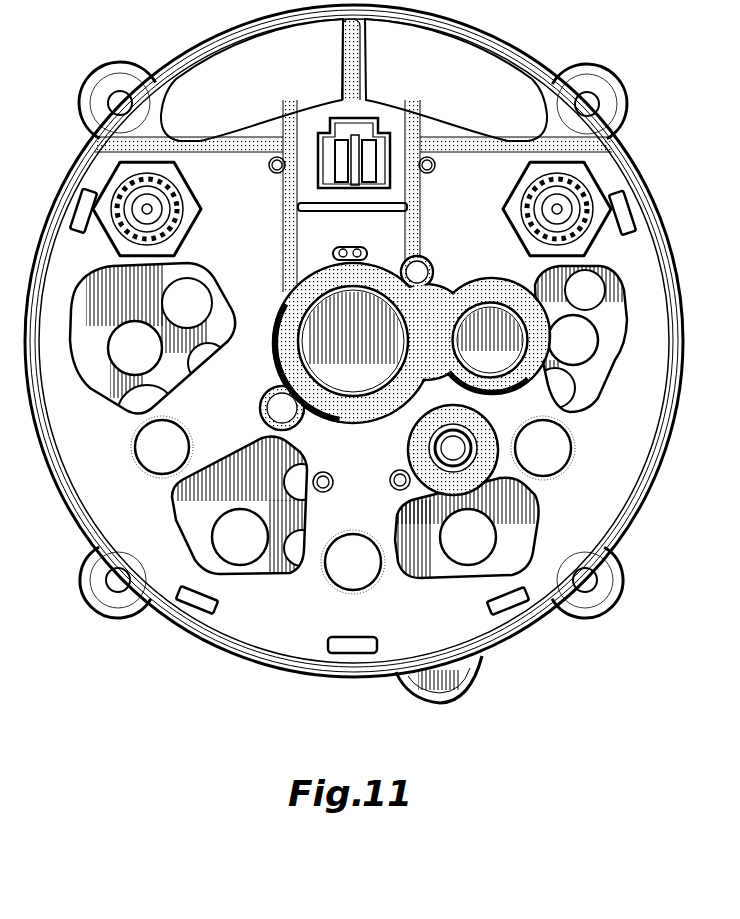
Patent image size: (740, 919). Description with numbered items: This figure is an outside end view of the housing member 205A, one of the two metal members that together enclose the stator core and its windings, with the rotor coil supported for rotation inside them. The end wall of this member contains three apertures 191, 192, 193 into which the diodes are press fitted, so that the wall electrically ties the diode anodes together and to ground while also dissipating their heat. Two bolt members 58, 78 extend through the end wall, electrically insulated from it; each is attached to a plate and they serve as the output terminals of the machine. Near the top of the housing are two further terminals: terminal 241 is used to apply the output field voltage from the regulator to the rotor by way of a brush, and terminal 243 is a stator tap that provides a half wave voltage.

The housing member 205A is at (247, 667).
The terminal 241 is at (388, 165).
The terminal 243 is at (322, 162).
The bolt member 58 is at (150, 209).
The bolt member 78 is at (555, 209).
The aperture 192 is at (132, 454).
The aperture 191 is at (572, 448).
The aperture 193 is at (337, 593).